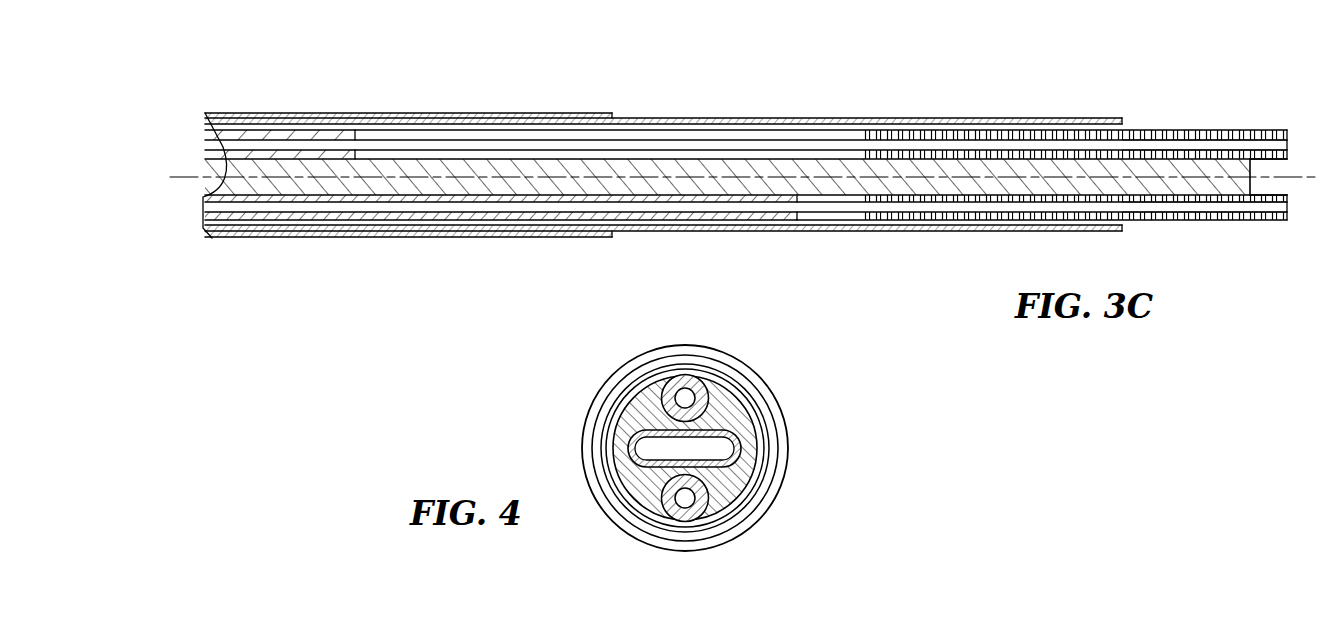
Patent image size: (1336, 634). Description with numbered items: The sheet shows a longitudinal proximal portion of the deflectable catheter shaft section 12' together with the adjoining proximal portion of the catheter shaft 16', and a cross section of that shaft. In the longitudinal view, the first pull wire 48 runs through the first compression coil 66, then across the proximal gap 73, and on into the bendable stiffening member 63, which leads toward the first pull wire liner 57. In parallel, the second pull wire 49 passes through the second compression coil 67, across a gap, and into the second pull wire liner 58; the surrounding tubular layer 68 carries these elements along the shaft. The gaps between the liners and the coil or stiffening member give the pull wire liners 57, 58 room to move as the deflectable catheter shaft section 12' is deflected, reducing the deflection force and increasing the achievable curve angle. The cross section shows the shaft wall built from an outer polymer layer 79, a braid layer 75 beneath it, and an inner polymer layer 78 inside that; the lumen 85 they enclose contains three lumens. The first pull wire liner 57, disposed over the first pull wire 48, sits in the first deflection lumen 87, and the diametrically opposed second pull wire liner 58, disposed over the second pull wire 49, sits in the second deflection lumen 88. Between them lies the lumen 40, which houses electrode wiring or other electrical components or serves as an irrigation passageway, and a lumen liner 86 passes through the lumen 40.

In FIG. 3C, the deflectable catheter shaft section 12' is at (663, 124).
In FIG. 3C, the distal shaft section 16' is at (1076, 116).
In FIG. 3C, the second pull wire liner 58 is at (297, 155).
In FIG. 4, the second pull wire liner 58 is at (694, 378).
In FIG. 3C, the tubular layer 68 is at (668, 155).
In FIG. 3C, the second compression coil 67 is at (957, 155).
In FIG. 3C, the second pull wire 49 is at (1245, 145).
In FIG. 4, the second pull wire 49 is at (662, 376).
In FIG. 3C, the first pull wire 48 is at (1253, 210).
In FIG. 4, the first pull wire 48 is at (685, 500).
In FIG. 3C, the first compression coil 66 is at (932, 198).
In FIG. 3C, the proximal gap 73 is at (827, 198).
In FIG. 3C, the bendable stiffening member 63 is at (652, 195).
In FIG. 4, the lumen 40 is at (627, 403).
In FIG. 4, the second deflection lumen 88 is at (713, 393).
In FIG. 4, the lumen liner 86 is at (627, 447).
In FIG. 4, the outer polymer layer 79 is at (782, 437).
In FIG. 4, the braid layer 75 is at (773, 458).
In FIG. 4, the inner polymer layer 78 is at (728, 493).
In FIG. 4, the lumen 85 is at (753, 482).
In FIG. 4, the first deflection lumen 87 is at (667, 508).
In FIG. 4, the first pull wire liner 57 is at (702, 510).